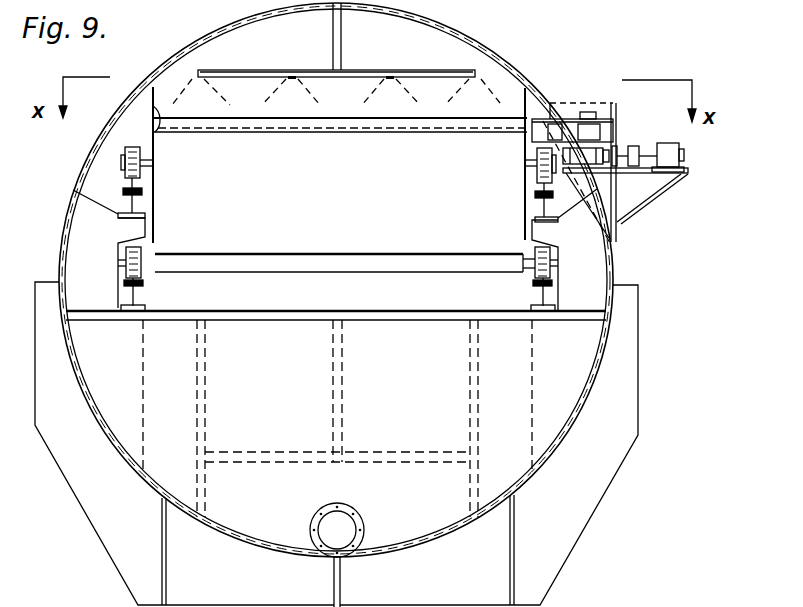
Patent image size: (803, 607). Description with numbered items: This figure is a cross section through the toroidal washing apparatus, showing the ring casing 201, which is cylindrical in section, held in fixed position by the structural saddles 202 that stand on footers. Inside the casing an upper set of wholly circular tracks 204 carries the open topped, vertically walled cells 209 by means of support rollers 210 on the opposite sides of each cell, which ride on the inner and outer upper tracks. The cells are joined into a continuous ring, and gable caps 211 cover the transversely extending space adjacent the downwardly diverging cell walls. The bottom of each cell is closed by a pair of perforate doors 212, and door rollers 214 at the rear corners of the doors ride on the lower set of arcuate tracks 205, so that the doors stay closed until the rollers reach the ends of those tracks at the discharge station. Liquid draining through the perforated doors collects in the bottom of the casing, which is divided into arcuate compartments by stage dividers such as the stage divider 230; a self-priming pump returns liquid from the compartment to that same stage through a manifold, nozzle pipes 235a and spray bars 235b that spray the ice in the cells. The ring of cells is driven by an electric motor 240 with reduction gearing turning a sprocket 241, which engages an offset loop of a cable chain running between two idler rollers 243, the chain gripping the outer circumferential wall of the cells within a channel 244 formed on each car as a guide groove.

The ring casing 201 is at (213, 34).
The structural saddles 202 is at (614, 462).
The upper set of wholly circular tracks 204 is at (124, 193).
The lower set of arcuate tracks 205 is at (138, 307).
The cells 209 is at (157, 128).
The support rollers 210 is at (127, 145).
The gable caps 211 is at (356, 119).
The perforate doors 212 is at (294, 262).
The door rollers 214 is at (150, 239).
The stage divider 230 is at (426, 335).
The nozzle pipes 235a is at (342, 42).
The spray bars 235b is at (392, 71).
The electric motor 240 is at (673, 144).
The sprocket 241 is at (600, 136).
The idler rollers 243 is at (535, 141).
The channel 244 is at (528, 120).